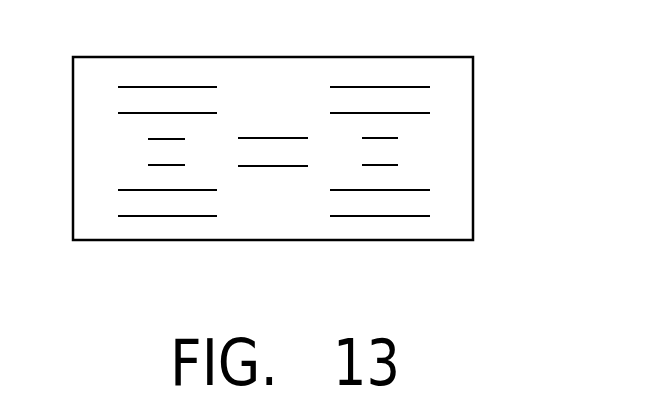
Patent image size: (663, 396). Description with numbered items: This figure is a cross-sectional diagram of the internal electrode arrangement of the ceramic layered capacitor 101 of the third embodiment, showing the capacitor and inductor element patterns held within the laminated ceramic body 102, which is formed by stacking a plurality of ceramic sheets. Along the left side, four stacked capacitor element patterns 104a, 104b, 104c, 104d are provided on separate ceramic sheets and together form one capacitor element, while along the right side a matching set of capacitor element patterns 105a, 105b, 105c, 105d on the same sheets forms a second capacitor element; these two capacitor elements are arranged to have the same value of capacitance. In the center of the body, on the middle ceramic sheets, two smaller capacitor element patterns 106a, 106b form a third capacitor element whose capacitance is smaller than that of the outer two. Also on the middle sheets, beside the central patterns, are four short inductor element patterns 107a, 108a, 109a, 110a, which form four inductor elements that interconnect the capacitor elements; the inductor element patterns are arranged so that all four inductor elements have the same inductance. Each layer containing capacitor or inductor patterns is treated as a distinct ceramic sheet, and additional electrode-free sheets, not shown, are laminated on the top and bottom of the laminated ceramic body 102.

The ceramic layered capacitor 101 is at (312, 148).
The laminated ceramic body 102 is at (482, 106).
The capacitor element pattern 104a is at (132, 87).
The capacitor element pattern 104b is at (200, 113).
The capacitor element pattern 104c is at (137, 218).
The capacitor element pattern 104d is at (207, 190).
The capacitor element pattern 105a is at (343, 87).
The capacitor element pattern 105b is at (403, 113).
The capacitor element pattern 105c is at (353, 218).
The capacitor element pattern 105d is at (423, 190).
The capacitor element pattern 106a is at (280, 122).
The capacitor element pattern 106b is at (267, 166).
The inductor element pattern 107a is at (160, 139).
The inductor element pattern 108a is at (160, 165).
The inductor element pattern 109a is at (378, 139).
The inductor element pattern 110a is at (380, 166).